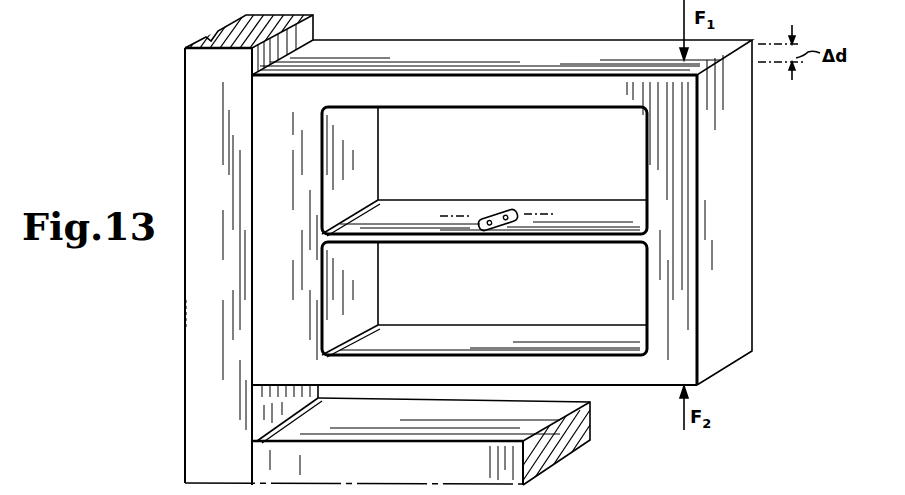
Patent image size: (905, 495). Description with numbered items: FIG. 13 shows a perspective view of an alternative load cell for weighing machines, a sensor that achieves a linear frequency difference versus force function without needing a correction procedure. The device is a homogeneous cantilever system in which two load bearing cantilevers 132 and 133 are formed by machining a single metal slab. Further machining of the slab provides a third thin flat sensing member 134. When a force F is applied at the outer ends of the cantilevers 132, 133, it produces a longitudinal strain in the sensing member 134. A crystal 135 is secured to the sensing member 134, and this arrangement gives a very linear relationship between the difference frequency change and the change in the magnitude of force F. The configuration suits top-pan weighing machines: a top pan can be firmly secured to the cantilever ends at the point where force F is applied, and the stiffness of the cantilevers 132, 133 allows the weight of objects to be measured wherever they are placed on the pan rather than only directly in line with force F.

The load bearing cantilever 132 is at (438, 46).
The load bearing cantilever 133 is at (521, 325).
The thin flat sensing member 134 is at (575, 202).
The crystal 135 is at (504, 211).